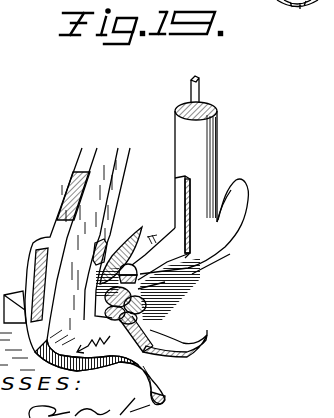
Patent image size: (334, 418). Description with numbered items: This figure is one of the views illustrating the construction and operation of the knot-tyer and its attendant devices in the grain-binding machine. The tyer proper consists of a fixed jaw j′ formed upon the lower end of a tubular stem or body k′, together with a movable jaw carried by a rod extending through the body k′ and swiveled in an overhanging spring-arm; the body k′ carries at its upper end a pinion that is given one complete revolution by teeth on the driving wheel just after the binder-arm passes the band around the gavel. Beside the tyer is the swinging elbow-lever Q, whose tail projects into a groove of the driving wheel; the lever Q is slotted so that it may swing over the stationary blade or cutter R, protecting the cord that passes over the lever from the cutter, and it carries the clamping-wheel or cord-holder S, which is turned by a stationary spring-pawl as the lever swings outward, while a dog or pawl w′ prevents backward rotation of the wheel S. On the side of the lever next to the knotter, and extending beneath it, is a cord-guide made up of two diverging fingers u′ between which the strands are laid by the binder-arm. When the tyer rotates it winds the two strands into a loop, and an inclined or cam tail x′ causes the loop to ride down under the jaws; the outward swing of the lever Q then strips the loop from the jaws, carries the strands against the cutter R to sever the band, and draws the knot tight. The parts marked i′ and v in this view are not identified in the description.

The tubular stem or body k′ is at (173, 155).
The inclined or cam tail x′ is at (204, 234).
The fixed jaw j′ is at (196, 217).
The arm i′ is at (152, 264).
The stationary blade or cutter R is at (142, 227).
The clamping-wheel or cord-holder S is at (105, 243).
The swinging elbow-lever Q is at (125, 160).
The frame v is at (84, 276).
The diverging fingers u′ is at (207, 331).
The dog or pawl w′ is at (168, 399).